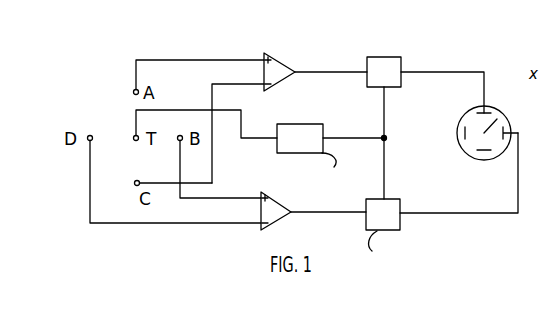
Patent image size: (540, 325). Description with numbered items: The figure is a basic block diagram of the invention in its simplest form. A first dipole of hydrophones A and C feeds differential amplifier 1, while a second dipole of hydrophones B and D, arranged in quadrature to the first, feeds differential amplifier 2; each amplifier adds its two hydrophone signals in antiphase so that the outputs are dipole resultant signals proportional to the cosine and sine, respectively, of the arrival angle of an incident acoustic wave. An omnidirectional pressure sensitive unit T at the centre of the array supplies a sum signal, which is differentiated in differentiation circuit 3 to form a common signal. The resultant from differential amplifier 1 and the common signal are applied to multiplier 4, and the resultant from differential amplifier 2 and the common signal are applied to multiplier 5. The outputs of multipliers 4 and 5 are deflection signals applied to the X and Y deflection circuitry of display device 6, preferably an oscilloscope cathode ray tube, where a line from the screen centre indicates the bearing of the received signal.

The differential amplifier 1 is at (277, 59).
The differential amplifier 2 is at (265, 199).
The differentiation circuit 3 is at (294, 124).
The multiplier 4 is at (382, 57).
The multiplier 5 is at (387, 200).
The display device 6 is at (508, 121).